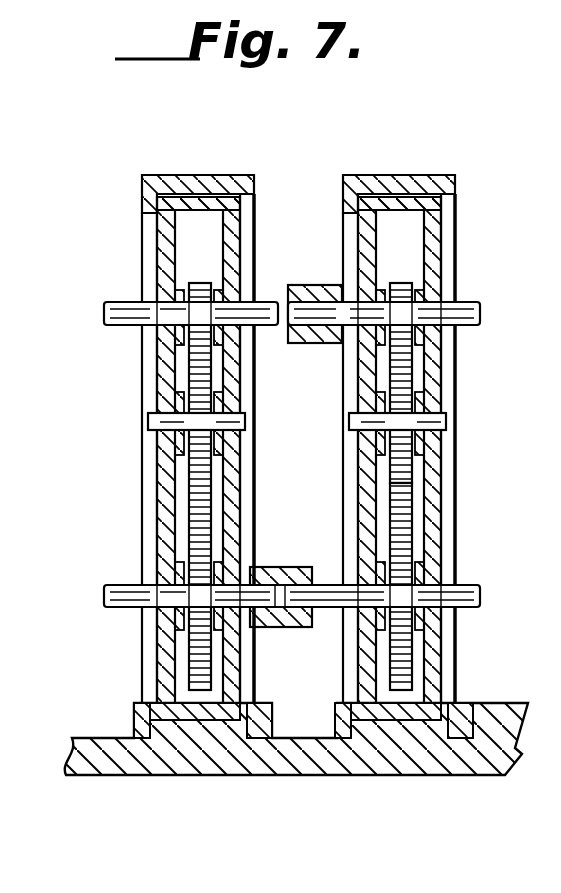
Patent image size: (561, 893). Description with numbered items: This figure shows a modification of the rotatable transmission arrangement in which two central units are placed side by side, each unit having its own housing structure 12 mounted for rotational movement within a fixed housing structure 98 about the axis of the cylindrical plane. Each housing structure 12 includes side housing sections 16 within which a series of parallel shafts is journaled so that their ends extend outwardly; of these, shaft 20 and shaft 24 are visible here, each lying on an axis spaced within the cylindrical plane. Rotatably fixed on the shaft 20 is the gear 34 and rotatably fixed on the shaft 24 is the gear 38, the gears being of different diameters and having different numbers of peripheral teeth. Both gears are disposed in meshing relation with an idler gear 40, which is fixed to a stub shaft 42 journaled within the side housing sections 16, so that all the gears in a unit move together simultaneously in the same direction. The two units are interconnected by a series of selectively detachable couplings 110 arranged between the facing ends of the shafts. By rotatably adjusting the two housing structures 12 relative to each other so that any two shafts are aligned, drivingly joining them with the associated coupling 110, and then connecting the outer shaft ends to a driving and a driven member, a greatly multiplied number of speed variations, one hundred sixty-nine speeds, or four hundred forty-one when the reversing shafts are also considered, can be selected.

The fixed housing structure 98 is at (153, 168).
The housing structure 12 is at (206, 197).
The side housing section 16 is at (236, 390).
The shaft 20 is at (126, 301).
The shaft 24 is at (126, 584).
The gear 34 is at (200, 284).
The gear 38 is at (403, 662).
The idler gear 40 is at (196, 366).
The stub shaft 42 is at (165, 422).
The selectively detachable coupling 110 is at (331, 286).